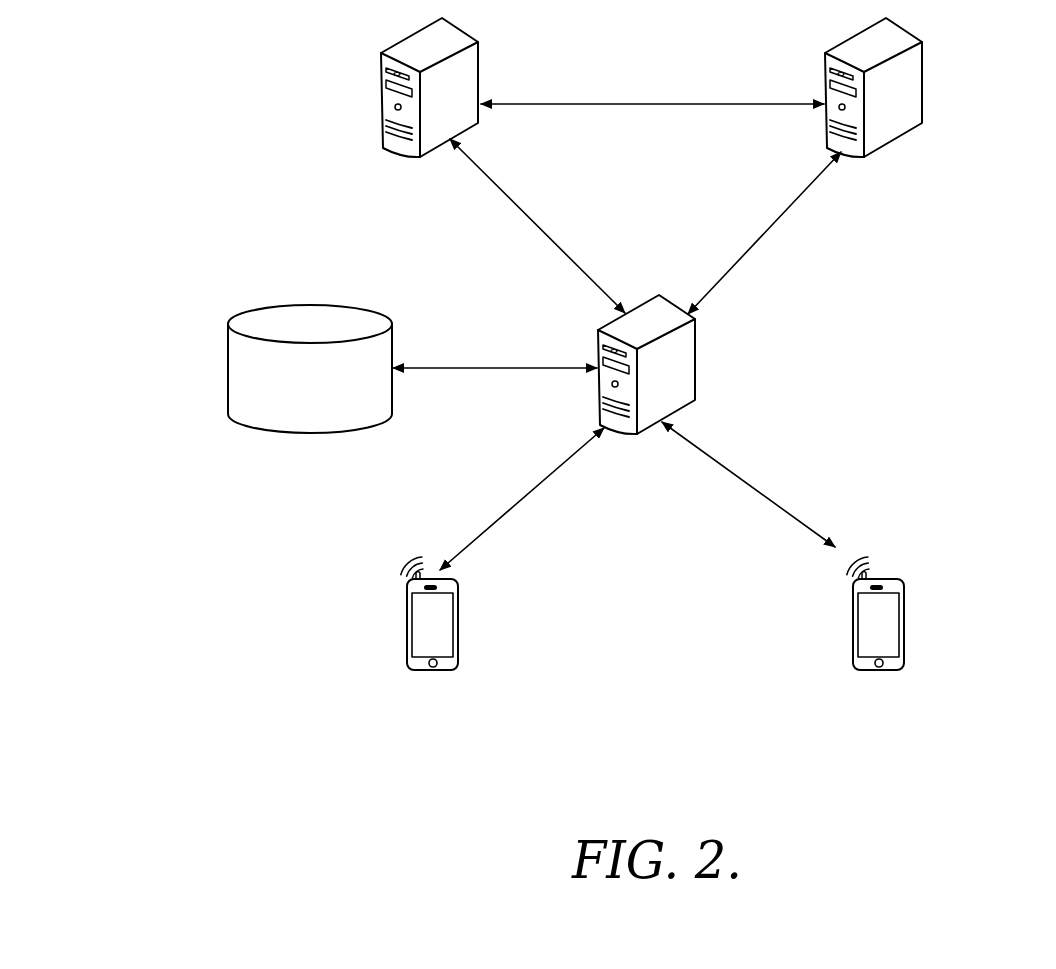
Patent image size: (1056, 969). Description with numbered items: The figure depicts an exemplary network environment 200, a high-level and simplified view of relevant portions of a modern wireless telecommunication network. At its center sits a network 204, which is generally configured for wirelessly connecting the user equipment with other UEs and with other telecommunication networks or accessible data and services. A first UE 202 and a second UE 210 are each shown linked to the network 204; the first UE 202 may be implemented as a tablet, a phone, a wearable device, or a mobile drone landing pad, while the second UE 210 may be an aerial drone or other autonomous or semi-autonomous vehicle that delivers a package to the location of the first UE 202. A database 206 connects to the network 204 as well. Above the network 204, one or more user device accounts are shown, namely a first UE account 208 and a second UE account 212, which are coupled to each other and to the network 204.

The network environment 200 is at (96, 95).
The first UE 202 is at (458, 627).
The network 204 is at (696, 352).
The database 206 is at (228, 365).
The first UE account 208 is at (480, 73).
The second UE 210 is at (904, 627).
The second UE account 212 is at (923, 73).